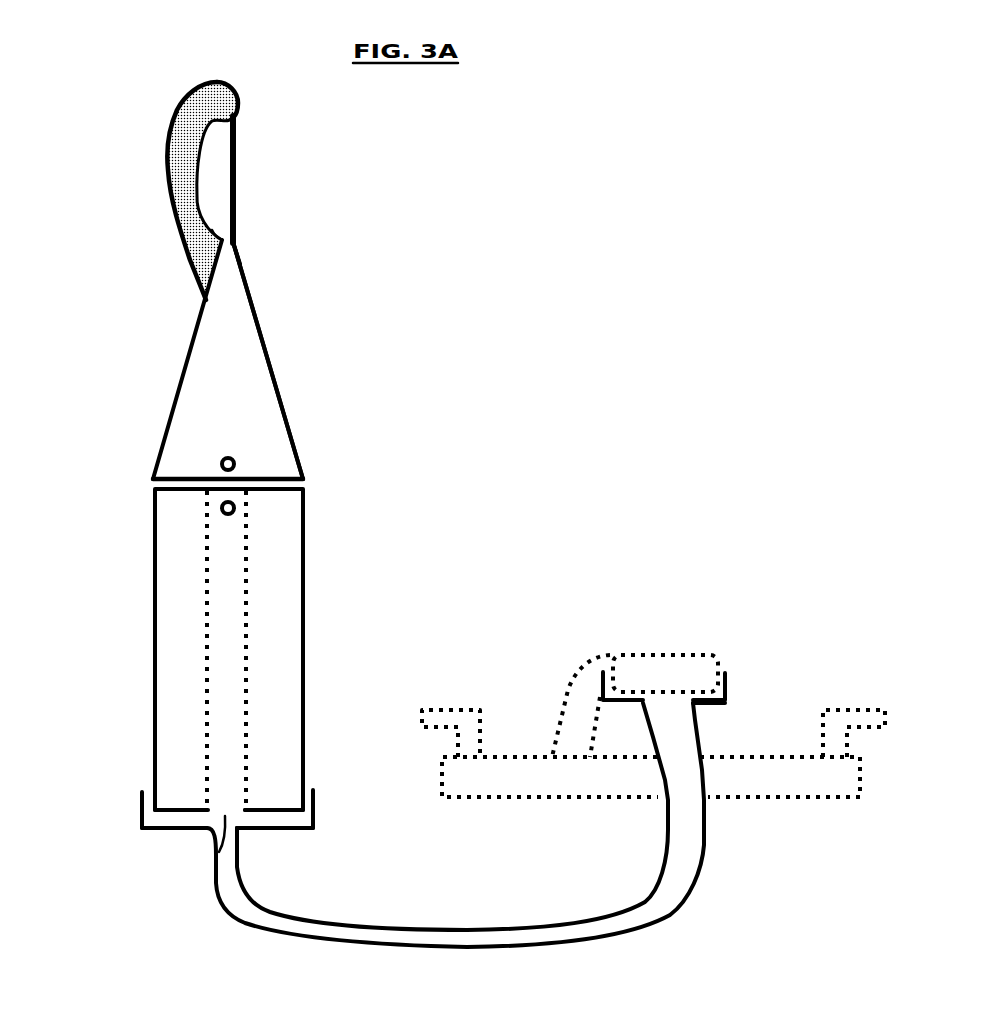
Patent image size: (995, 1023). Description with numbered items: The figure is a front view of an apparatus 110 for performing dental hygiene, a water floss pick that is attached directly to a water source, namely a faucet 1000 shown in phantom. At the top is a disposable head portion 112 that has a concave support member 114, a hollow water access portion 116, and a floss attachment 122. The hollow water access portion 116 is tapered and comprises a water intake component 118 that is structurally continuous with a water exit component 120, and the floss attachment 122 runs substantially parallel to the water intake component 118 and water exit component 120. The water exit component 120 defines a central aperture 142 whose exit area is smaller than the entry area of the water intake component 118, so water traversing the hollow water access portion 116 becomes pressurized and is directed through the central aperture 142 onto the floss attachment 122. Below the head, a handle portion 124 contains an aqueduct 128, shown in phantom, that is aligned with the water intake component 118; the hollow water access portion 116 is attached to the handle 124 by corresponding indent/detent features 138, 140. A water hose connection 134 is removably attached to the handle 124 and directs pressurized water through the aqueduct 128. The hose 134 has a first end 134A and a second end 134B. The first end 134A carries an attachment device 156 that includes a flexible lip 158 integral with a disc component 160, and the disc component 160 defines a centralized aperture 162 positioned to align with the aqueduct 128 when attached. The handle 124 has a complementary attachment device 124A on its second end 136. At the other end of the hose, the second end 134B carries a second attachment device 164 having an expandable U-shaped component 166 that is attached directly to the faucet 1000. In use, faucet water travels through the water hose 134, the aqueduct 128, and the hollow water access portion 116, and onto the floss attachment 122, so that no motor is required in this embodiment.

The apparatus 110 is at (458, 382).
The disposable head portion 112 is at (168, 335).
The concave support member 114 is at (180, 137).
The hollow water access portion 116 is at (268, 360).
The water intake component 118 is at (285, 465).
The water exit component 120 is at (237, 242).
The floss attachment 122 is at (237, 167).
The handle portion 124 is at (135, 703).
The attachment device 124A is at (153, 795).
The aqueduct 128 is at (218, 657).
The water hose connection 134 is at (465, 927).
The first end 134A is at (140, 825).
The second end 134B is at (728, 678).
The second end 136 is at (278, 795).
The indent/detent feature 138 is at (219, 508).
The indent/detent feature 140 is at (220, 464).
The central aperture 142 is at (218, 226).
The attachment device 156 is at (172, 833).
The flexible lip 158 is at (318, 802).
The disc component 160 is at (273, 830).
The centralized aperture 162 is at (213, 860).
The second attachment device 164 is at (603, 695).
The expandable U-shaped component 166 is at (698, 703).
The faucet 1000 is at (573, 712).